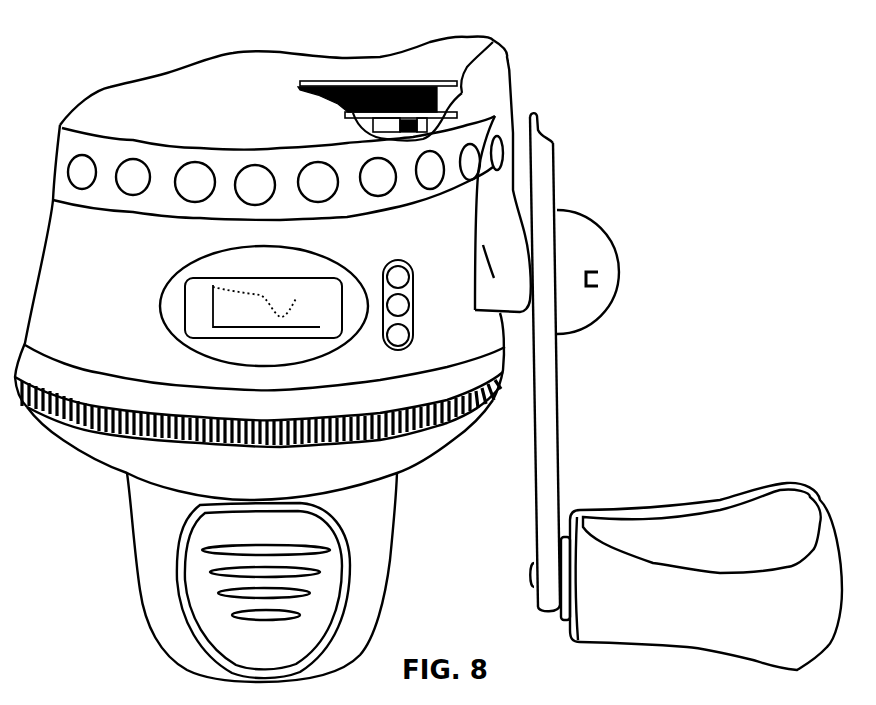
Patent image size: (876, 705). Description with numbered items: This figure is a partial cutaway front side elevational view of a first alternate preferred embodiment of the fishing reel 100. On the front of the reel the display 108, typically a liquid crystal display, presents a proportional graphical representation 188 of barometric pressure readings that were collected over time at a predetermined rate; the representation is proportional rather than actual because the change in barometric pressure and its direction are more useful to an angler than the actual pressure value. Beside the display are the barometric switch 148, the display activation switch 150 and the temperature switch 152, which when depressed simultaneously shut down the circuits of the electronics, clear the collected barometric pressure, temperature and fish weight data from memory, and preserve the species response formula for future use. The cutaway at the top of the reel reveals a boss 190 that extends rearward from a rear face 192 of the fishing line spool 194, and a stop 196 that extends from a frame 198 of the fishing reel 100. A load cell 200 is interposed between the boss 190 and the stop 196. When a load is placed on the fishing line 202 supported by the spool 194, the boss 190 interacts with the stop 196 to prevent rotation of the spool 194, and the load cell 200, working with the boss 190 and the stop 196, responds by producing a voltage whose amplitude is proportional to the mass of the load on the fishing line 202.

The fishing reel 100 is at (580, 73).
The display 108 is at (178, 266).
The proportional graphical representation 188 is at (328, 295).
The barometric switch 148 is at (402, 275).
The display activation switch 150 is at (405, 303).
The temperature switch 152 is at (405, 333).
The boss 190 is at (470, 116).
The rear face 192 is at (367, 132).
The fishing line spool 194 is at (300, 70).
The stop 196 is at (380, 93).
The frame 198 is at (343, 100).
The load cell 200 is at (413, 110).
The fishing line 202 is at (467, 82).